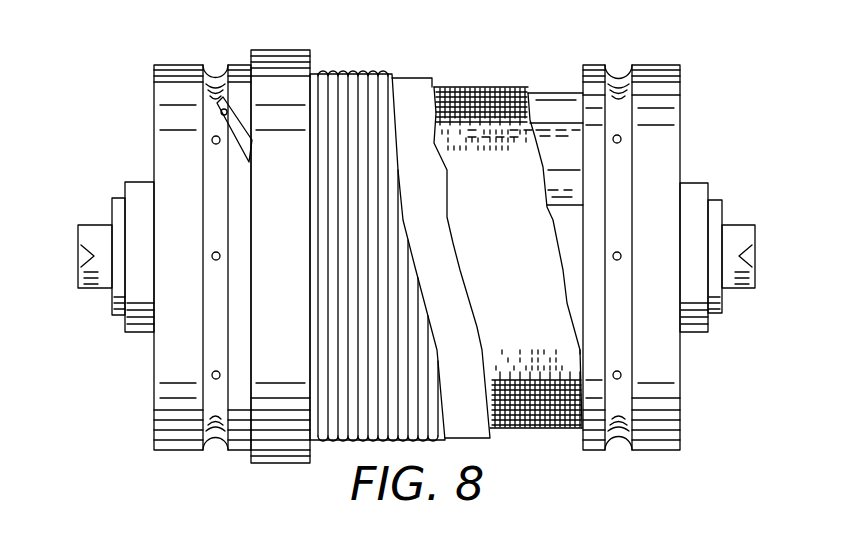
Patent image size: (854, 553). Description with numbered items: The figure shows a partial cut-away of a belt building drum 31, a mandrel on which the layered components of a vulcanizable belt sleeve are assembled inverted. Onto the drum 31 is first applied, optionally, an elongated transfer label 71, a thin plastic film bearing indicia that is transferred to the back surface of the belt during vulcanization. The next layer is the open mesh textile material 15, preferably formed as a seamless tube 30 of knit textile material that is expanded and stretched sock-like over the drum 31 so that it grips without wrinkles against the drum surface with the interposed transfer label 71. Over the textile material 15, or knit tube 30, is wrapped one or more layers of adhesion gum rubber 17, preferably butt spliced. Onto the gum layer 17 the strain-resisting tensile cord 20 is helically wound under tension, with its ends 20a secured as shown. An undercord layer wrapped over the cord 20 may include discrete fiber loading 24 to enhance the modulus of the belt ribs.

The discrete fiber loading 24 is at (287, 65).
The strain-resisting tensile cord 20 is at (355, 72).
The adhesion gum rubber 17 is at (410, 90).
The open mesh textile material 15 is at (486, 97).
The building drum 31 is at (562, 91).
The transfer label 71 is at (560, 182).
The ends of tensile cord 20a is at (245, 128).
The seamless tube of knit textile material 30 is at (562, 447).